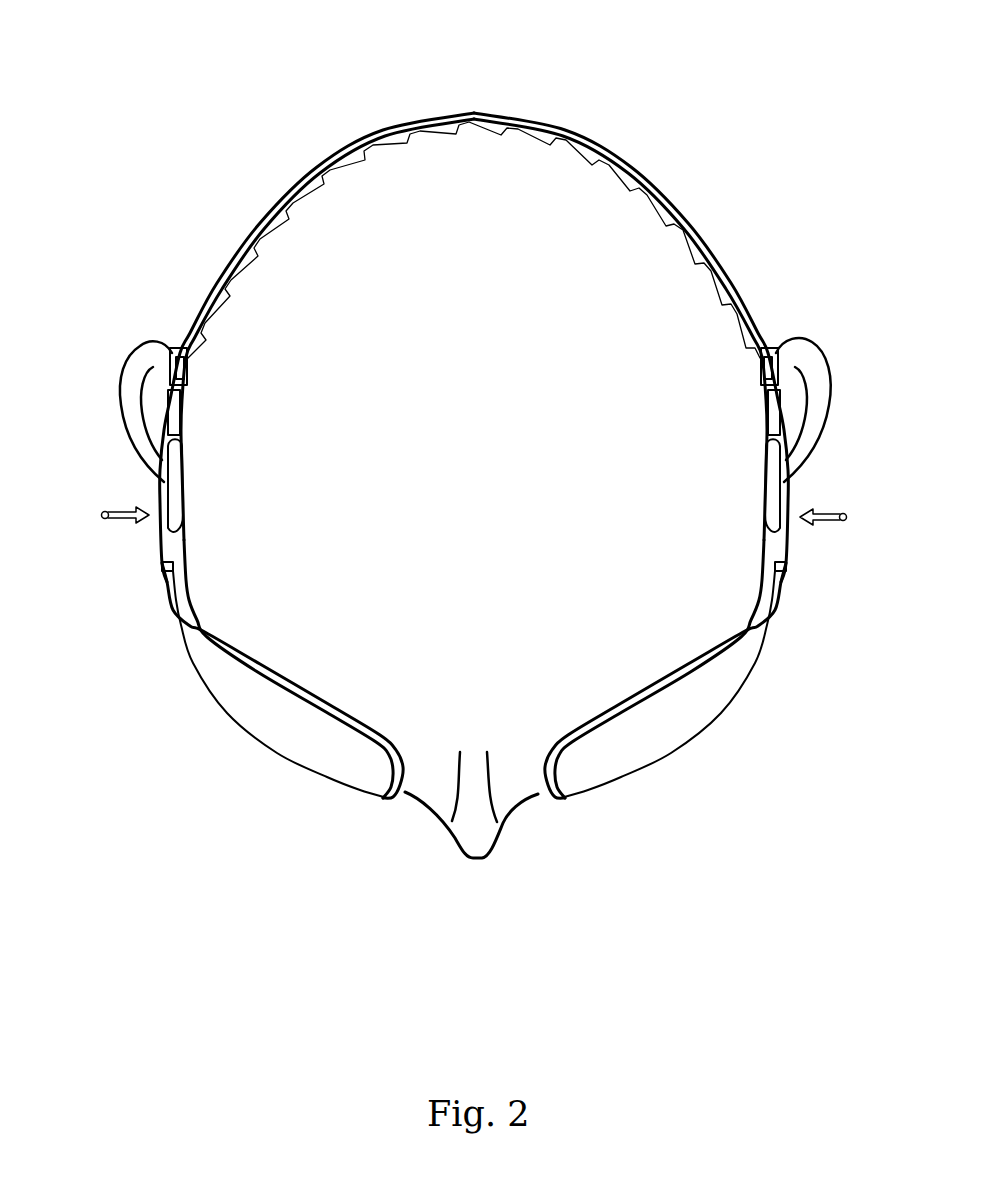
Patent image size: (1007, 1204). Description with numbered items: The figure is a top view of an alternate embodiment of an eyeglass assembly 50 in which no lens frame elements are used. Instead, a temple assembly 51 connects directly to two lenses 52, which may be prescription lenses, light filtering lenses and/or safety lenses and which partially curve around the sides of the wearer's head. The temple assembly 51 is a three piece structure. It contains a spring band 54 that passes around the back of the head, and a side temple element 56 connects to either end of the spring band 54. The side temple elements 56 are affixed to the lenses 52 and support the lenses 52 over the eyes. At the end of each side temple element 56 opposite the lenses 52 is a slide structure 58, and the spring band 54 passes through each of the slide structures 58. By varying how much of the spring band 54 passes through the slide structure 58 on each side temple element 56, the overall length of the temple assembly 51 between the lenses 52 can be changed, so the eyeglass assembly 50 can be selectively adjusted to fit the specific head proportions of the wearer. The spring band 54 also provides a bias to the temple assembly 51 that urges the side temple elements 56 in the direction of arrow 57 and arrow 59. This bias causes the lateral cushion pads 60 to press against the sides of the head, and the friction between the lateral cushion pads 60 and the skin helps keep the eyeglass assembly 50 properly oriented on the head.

The eyeglass assembly 50 is at (771, 79).
The temple assembly 51 is at (767, 284).
The lenses 52 is at (580, 785).
The spring band 54 is at (539, 118).
The side temple element 56 is at (165, 543).
The arrow 57 is at (126, 510).
The slide structure 58 is at (178, 347).
The arrow 59 is at (826, 522).
The lateral cushion pads 60 is at (170, 465).